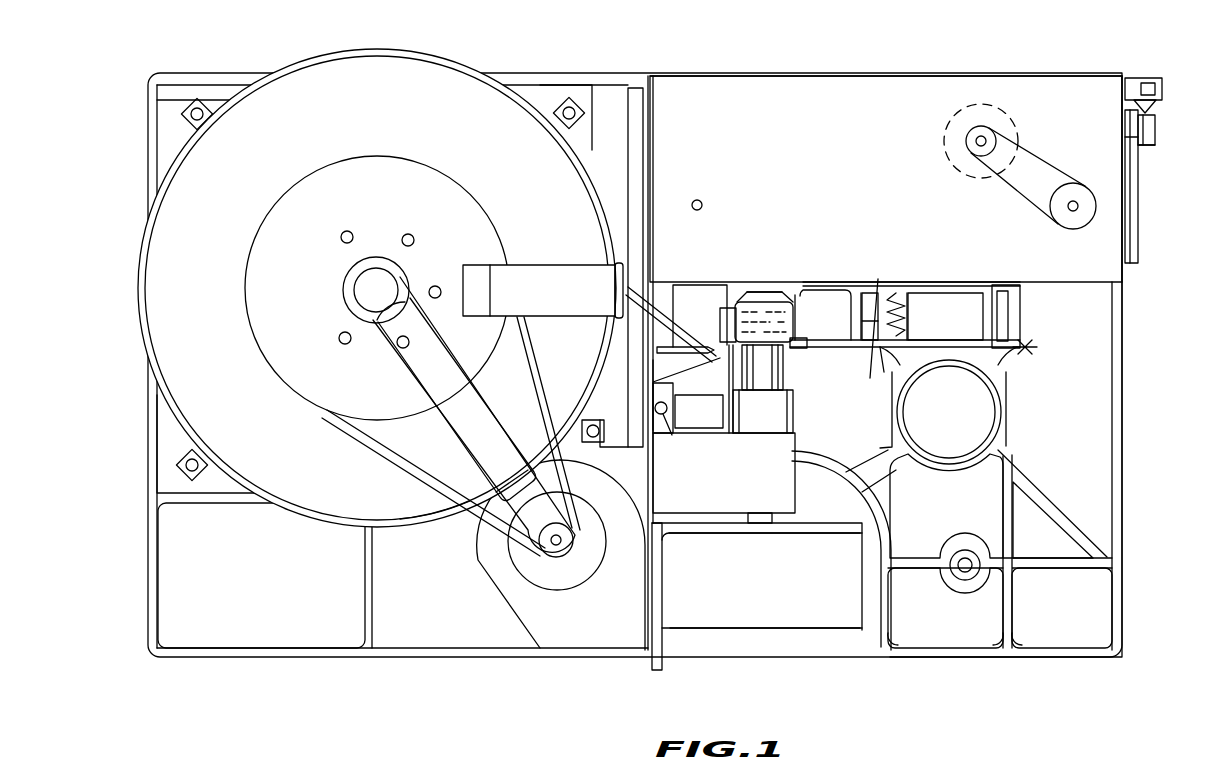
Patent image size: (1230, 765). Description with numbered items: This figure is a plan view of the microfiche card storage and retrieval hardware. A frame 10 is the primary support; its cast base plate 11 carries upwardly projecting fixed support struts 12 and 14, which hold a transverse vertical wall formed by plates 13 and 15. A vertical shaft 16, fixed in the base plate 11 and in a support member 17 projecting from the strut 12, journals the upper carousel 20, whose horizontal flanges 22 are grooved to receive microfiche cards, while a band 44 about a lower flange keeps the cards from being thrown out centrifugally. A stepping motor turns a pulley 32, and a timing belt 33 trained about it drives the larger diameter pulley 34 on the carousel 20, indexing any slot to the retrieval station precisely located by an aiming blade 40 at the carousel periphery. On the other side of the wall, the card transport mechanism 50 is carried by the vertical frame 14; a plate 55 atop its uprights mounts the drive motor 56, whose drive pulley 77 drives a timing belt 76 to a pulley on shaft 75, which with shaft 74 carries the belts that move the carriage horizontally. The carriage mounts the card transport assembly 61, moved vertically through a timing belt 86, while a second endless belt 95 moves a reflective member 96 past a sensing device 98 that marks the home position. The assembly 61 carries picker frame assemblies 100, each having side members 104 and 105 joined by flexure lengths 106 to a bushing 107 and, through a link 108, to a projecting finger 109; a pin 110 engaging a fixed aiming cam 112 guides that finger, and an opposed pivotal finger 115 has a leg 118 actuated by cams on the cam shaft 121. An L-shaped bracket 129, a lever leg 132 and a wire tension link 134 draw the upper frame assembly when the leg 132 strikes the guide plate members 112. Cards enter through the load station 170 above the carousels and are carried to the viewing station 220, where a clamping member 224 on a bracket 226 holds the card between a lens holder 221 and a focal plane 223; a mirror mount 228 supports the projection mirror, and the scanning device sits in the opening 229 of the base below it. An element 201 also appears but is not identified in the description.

The frame 10 is at (1132, 410).
The cast base plate 11 is at (1048, 495).
The fixed support strut 12 is at (571, 645).
The plate 13 is at (655, 568).
The fixed support strut 14 is at (1125, 276).
The plate 15 is at (656, 132).
The shaft 16 is at (376, 272).
The support member 17 is at (478, 385).
The carousel 20 is at (136, 265).
The flange 22 is at (152, 232).
The pulley 32 is at (566, 560).
The timing belt 33 is at (390, 460).
The pulley 34 is at (262, 298).
The aiming blade 40 is at (626, 318).
The band 44 is at (438, 528).
The microfiche card transport mechanism 50 is at (1072, 78).
The plate 55 is at (872, 92).
The drive motor 56 is at (944, 155).
The microfiche card transport assembly 61 is at (1027, 351).
The shaft 74 is at (703, 201).
The shaft 75 is at (1073, 213).
The timing belt 76 is at (1048, 162).
The drive pulley 77 is at (970, 133).
The timing belt 86 is at (1138, 262).
The second endless belt 95 is at (1155, 146).
The light reflective member 96 is at (1157, 120).
The sensing device 98 is at (1156, 90).
The picker frame assembly 100 is at (938, 352).
The side member 104 is at (942, 284).
The side member 105 is at (965, 358).
The reduced thickness flexure length 106 is at (945, 316).
The bushing 107 is at (1018, 312).
The angularly directed link 108 is at (786, 355).
The projecting finger 109 is at (833, 286).
The pin 110 is at (871, 362).
The aiming cam 112 is at (713, 335).
The pivotal finger 115 is at (833, 287).
The leg 118 is at (790, 411).
The cam shaft 121 is at (678, 436).
The L-shaped bracket 129 is at (905, 292).
The leg 132 is at (881, 380).
The tension link 134 is at (876, 290).
The load station 170 is at (532, 266).
The feed arm 201 is at (668, 292).
The viewing station 220 is at (777, 288).
The lens holder 221 is at (786, 384).
The focal plane 223 is at (746, 287).
The clamping member 224 is at (740, 298).
The bracket 226 is at (688, 409).
The mirror mount 228 is at (749, 626).
The opening 229 is at (882, 642).